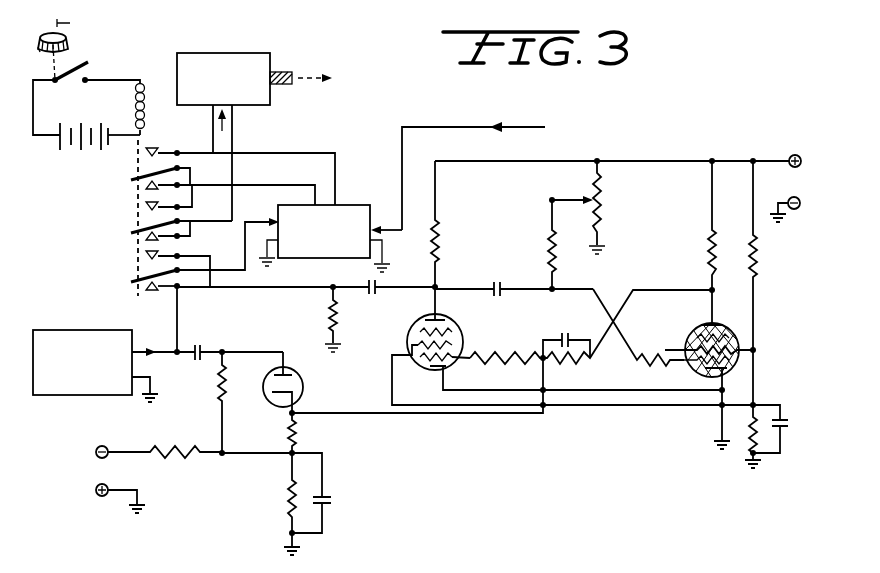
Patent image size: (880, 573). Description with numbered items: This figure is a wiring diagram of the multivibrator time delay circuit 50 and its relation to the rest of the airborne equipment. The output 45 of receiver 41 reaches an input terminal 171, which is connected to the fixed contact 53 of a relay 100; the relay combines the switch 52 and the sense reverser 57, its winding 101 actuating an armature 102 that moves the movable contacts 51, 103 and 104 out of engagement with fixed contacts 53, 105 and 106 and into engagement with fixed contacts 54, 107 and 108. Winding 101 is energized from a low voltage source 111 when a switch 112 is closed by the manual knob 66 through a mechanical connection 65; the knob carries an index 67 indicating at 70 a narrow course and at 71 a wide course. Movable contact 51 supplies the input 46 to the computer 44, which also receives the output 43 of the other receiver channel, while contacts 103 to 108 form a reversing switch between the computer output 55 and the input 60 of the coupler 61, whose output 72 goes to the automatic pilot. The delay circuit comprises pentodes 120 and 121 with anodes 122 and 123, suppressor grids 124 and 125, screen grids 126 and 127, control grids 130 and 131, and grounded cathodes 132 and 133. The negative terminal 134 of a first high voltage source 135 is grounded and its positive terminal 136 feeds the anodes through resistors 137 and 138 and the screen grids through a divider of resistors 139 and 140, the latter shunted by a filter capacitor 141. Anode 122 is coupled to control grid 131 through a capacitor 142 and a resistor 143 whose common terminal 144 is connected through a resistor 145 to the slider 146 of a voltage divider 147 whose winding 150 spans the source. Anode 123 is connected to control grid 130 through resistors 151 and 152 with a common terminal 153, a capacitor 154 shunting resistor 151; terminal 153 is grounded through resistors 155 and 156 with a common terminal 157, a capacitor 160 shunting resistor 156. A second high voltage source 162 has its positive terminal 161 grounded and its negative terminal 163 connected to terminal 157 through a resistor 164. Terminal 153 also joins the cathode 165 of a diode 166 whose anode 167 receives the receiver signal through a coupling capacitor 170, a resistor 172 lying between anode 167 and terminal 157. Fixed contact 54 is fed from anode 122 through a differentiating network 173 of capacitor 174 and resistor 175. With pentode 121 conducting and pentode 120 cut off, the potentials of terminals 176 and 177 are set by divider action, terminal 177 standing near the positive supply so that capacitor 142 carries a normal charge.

The first receiver 41 is at (46, 397).
The output of second receiver 43 is at (431, 127).
The computer 44 is at (320, 259).
The output of first receiver 45 is at (144, 350).
The computer input 46 is at (243, 271).
The multivibrator time delay circuit 50 is at (612, 197).
The movable contact 51 is at (133, 281).
The single pole double throw switch 52 is at (112, 239).
The first fixed contact 53 is at (153, 290).
The second fixed contact 54 is at (147, 258).
The computer output 55 is at (272, 184).
The sense reverser 57 is at (118, 180).
The coupler input 60 is at (233, 140).
The coupler 61 is at (254, 106).
The mechanical connection 65 is at (70, 65).
The manual knob 66 is at (68, 40).
The index 67 is at (38, 48).
The narrow course indication 70 is at (31, 43).
The wide course indication 71 is at (73, 22).
The coupler output 72 is at (283, 85).
The relay 100 is at (156, 68).
The winding 101 is at (145, 112).
The armature 102 is at (135, 145).
The movable contact 103 is at (133, 231).
The movable contact 104 is at (133, 173).
The fixed contact 105 is at (148, 240).
The fixed contact 106 is at (146, 187).
The fixed contact 107 is at (146, 208).
The fixed contact 108 is at (150, 149).
The low voltage source 111 is at (83, 122).
The switch 112 is at (50, 107).
The pentode 120 is at (496, 336).
The pentode 121 is at (664, 338).
The anode 122 is at (446, 318).
The anode 123 is at (706, 320).
The suppressor grid 124 is at (456, 332).
The suppressor grid 125 is at (700, 330).
The screen grid 126 is at (455, 346).
The screen grid 127 is at (665, 350).
The control grid 130 is at (453, 360).
The control grid 131 is at (686, 366).
The cathode 132 is at (430, 368).
The cathode 133 is at (716, 370).
The negative terminal 134 is at (794, 211).
The first high voltage source 135 is at (778, 186).
The positive terminal 136 is at (793, 156).
The resistor 137 is at (438, 229).
The resistor 138 is at (706, 249).
The resistor 139 is at (757, 258).
The resistor 140 is at (750, 455).
The filter capacitor 141 is at (780, 397).
The capacitor 142 is at (493, 281).
The resistor 143 is at (636, 363).
The common terminal 144 is at (554, 288).
The resistor 145 is at (549, 252).
The slider 146 is at (560, 199).
The voltage divider 147 is at (602, 190).
The winding 150 is at (598, 215).
The resistor 151 is at (558, 362).
The isolating resistor 152 is at (498, 364).
The common terminal 153 is at (543, 356).
The capacitor 154 is at (572, 338).
The resistor 155 is at (298, 435).
The resistor 156 is at (288, 495).
The common terminal 157 is at (300, 455).
The capacitor 160 is at (331, 509).
The positive terminal 161 is at (98, 496).
The second high voltage source 162 is at (101, 470).
The negative terminal 163 is at (96, 452).
The resistor 164 is at (170, 458).
The cathode 165 is at (282, 403).
The diode 166 is at (268, 400).
The anode 167 is at (272, 376).
The coupling capacitor 170 is at (203, 350).
The input terminal 171 is at (176, 356).
The resistor 172 is at (218, 405).
The differentiating network 173 is at (351, 300).
The capacitor 174 is at (378, 283).
The resistor 175 is at (327, 329).
The terminal 176 is at (715, 292).
The terminal 177 is at (440, 268).